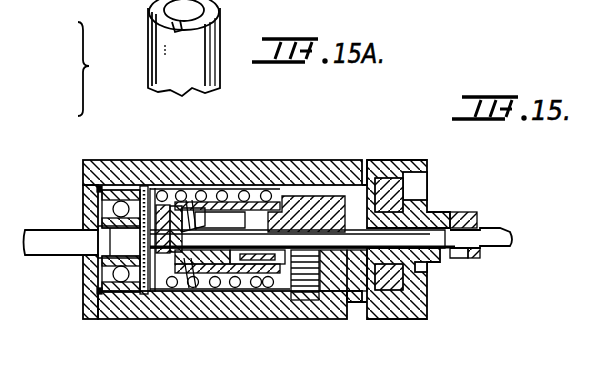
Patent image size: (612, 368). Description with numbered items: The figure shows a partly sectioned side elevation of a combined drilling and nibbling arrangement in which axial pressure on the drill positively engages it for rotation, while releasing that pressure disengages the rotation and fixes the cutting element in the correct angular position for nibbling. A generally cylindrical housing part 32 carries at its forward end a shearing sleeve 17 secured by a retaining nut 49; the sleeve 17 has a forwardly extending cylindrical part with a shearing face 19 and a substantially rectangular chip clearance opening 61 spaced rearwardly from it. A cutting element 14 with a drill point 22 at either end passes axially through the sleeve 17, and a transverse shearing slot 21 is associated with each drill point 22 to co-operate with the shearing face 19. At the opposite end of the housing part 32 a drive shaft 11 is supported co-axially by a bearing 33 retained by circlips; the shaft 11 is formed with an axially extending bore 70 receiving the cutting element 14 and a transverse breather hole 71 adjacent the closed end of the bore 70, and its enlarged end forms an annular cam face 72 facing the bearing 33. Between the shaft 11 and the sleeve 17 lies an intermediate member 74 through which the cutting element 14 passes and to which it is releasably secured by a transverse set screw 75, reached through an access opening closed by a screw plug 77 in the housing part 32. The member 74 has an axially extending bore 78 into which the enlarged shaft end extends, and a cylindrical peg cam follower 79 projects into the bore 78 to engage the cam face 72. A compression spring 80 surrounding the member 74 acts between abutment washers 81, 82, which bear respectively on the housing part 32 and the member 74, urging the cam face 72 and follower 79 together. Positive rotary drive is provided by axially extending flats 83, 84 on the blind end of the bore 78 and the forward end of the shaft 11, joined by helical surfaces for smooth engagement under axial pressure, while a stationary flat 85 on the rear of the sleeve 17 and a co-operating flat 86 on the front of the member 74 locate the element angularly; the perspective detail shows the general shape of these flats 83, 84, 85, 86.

In FIG. 15, the drive shaft 11 is at (50, 236).
In FIG. 15, the cutting element 14 is at (440, 236).
In FIG. 15, the shearing sleeve 17 is at (392, 160).
In FIG. 15, the shearing face 19 is at (482, 258).
In FIG. 15, the transverse shearing slot 21 is at (466, 212).
In FIG. 15, the drill point 22 is at (510, 232).
In FIG. 15, the housing part 32 is at (319, 162).
In FIG. 15, the bearing 33 is at (100, 262).
In FIG. 15, the retaining nut 49 is at (408, 164).
In FIG. 15, the chip clearance opening 61 is at (466, 258).
In FIG. 15, the axially extending bore 70 is at (165, 205).
In FIG. 15, the transverse breather hole 71 is at (187, 206).
In FIG. 15, the annular cam face 72 is at (196, 208).
In FIG. 15, the intermediate member 74 is at (300, 200).
In FIG. 15, the transverse set screw 75 is at (324, 292).
In FIG. 15, the screw plug 77 is at (303, 300).
In FIG. 15, the axially extending bore 78 is at (258, 213).
In FIG. 15, the cylindrical peg cam follower 79 is at (178, 294).
In FIG. 15, the compression spring 80 is at (223, 190).
In FIG. 15, the abutment washer 81 is at (145, 294).
In FIG. 15, the abutment washer 82 is at (272, 292).
In FIG. 15A, the axially extending flat 83 is at (105, 49).
In FIG. 15, the axially extending flat 83 is at (241, 292).
In FIG. 15A, the axially extending flat 84 is at (148, 32).
In FIG. 15, the axially extending flat 84 is at (218, 292).
In FIG. 15A, the stationary flat 85 is at (129, 58).
In FIG. 15, the stationary flat 85 is at (393, 319).
In FIG. 15A, the co-operating flat 86 is at (103, 64).
In FIG. 15, the co-operating flat 86 is at (347, 300).